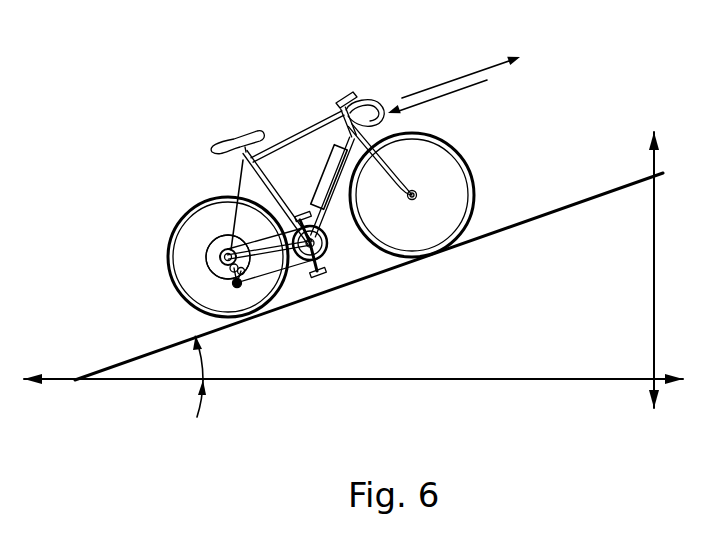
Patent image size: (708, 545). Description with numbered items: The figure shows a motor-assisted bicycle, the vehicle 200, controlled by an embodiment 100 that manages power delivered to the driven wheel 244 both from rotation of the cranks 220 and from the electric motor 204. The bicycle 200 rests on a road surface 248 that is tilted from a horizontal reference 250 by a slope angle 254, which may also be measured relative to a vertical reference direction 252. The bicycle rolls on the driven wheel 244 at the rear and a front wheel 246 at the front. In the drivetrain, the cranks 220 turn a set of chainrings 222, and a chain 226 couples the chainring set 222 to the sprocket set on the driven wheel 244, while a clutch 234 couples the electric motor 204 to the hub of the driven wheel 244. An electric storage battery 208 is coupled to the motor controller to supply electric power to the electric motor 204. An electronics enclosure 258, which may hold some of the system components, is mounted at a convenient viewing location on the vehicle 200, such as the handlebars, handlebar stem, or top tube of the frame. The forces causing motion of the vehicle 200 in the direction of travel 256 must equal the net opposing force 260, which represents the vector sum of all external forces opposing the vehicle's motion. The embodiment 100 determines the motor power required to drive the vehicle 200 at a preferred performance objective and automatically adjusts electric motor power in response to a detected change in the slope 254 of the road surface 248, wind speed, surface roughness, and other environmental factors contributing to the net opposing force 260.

The embodiment 100 is at (199, 70).
The vehicle 200 is at (312, 133).
The electric motor 204 is at (204, 262).
The clutch 234 is at (228, 257).
The electric storage battery 208 is at (312, 203).
The cranks 220 is at (322, 262).
The set of chainrings 222 is at (330, 245).
The chain 226 is at (262, 287).
The driven wheel 244 is at (168, 243).
The front wheel 246 is at (474, 175).
The road surface 248 is at (540, 212).
The horizontal reference direction 250 is at (408, 378).
The vertical reference direction 252 is at (652, 272).
The slope angle 254 is at (208, 370).
The direction of travel 256 is at (480, 67).
The electronics enclosure 258 is at (343, 98).
The net opposing force 260 is at (468, 80).